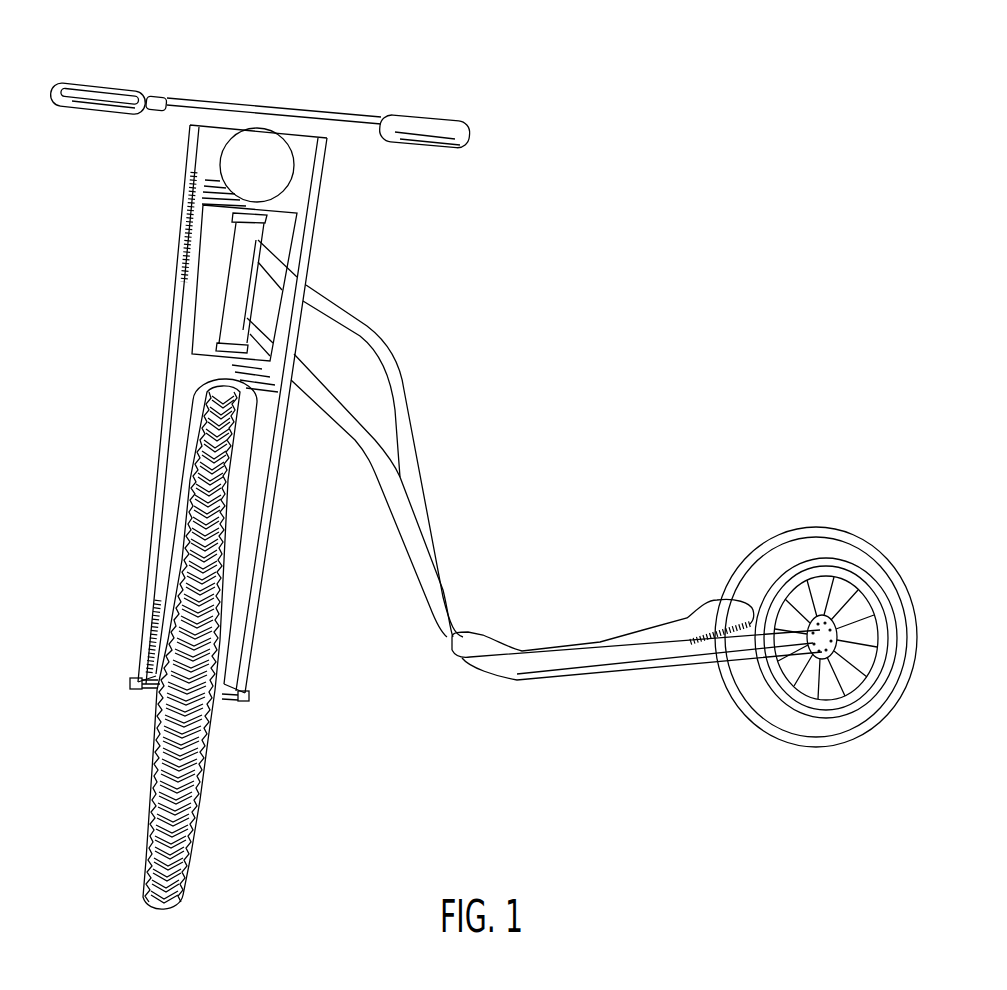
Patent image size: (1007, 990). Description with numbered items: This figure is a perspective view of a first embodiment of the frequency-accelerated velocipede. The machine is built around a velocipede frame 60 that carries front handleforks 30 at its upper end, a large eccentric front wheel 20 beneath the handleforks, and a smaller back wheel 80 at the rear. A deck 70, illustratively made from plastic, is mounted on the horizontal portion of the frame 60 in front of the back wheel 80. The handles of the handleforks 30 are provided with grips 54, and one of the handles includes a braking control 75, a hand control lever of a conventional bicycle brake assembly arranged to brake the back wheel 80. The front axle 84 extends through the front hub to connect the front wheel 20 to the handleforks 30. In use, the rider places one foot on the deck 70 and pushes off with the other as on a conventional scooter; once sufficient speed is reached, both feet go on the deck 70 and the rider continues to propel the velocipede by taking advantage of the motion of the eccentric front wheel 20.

The eccentric front wheel 20 is at (198, 790).
The front handleforks 30 is at (168, 382).
The grips 54 is at (73, 82).
The velocipede frame 60 is at (412, 394).
The deck 70 is at (645, 632).
The braking control 75 is at (160, 97).
The back wheel 80 is at (874, 553).
The front axle 84 is at (232, 702).